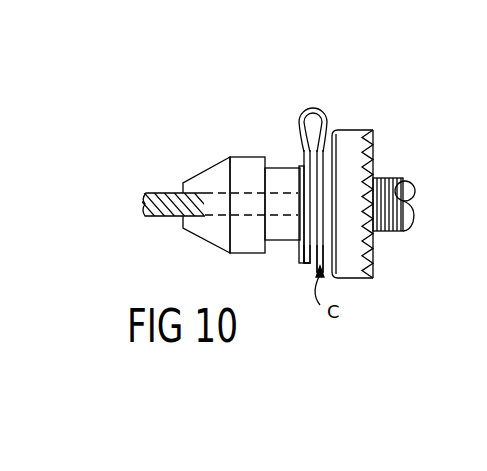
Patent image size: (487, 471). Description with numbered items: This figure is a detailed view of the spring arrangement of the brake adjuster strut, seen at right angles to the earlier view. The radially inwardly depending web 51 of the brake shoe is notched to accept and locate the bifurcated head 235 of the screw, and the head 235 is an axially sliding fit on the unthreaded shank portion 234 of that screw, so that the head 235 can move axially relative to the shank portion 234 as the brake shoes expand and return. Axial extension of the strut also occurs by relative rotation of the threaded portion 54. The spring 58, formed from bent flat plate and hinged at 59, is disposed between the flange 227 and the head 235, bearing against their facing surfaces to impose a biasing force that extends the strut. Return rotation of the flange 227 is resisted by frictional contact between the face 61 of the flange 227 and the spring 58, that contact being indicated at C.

The web 51 is at (163, 207).
The bifurcated head 235 is at (215, 173).
The spring 58 is at (300, 256).
The hinge 59 is at (300, 186).
The face 61 is at (322, 158).
The unthreaded shank portion 234 is at (310, 263).
The flange 227 is at (353, 130).
The threaded portion 54 is at (405, 210).